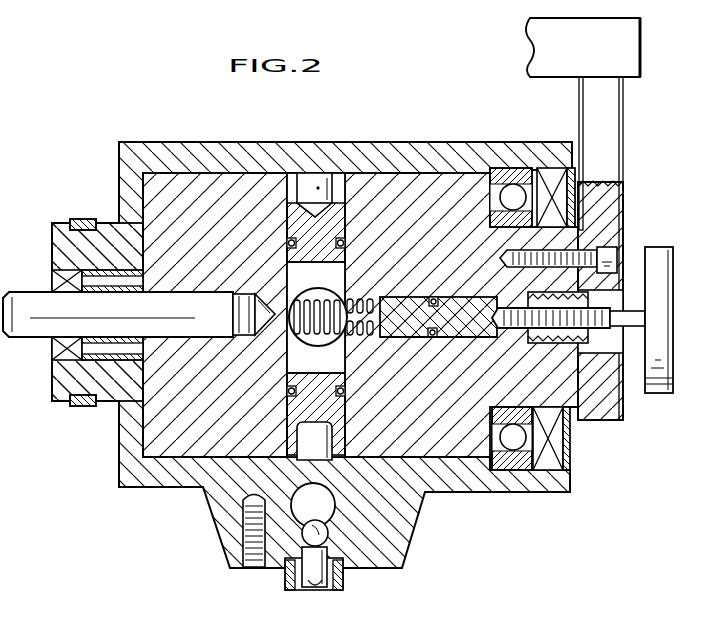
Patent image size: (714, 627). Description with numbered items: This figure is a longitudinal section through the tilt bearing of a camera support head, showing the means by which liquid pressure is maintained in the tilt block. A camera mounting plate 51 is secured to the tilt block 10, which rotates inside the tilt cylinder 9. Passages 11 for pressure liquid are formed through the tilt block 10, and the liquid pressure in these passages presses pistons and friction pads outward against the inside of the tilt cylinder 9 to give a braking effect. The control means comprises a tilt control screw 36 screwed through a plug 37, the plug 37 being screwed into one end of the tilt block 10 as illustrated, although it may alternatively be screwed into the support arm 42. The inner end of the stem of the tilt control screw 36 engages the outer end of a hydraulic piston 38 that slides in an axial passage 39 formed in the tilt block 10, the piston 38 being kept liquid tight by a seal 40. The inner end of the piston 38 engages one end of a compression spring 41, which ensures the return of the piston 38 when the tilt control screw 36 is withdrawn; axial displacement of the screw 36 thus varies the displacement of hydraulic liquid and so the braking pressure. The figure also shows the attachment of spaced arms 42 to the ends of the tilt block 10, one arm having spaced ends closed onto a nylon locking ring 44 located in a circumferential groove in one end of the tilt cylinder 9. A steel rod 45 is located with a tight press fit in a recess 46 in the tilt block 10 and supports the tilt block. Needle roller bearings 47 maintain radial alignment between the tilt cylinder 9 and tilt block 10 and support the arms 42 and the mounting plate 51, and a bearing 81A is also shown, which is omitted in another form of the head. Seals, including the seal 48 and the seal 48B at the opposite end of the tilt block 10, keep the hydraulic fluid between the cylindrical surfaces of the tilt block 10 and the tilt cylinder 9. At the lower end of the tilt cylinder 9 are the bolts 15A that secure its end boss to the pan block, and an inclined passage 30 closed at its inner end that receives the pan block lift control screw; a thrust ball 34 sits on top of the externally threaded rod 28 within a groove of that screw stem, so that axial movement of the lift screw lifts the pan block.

The tilt block 10 is at (210, 190).
The needle roller bearings 47 is at (75, 362).
The nylon locking ring 44 is at (83, 219).
The seal 48 is at (58, 280).
The steel rod 45 is at (129, 314).
The recess 46 is at (242, 300).
The passages 11 is at (320, 292).
The inclined passage 30 is at (313, 497).
The compression spring 41 is at (318, 331).
The hydraulic piston 38 is at (412, 300).
The axial passage 39 is at (410, 338).
The tilt cylinder 9 is at (503, 168).
The bearing 81A is at (513, 190).
The seal 48B is at (572, 176).
The support arm 42 is at (625, 125).
The camera mounting plate 51 is at (523, 37).
The seal 40 is at (436, 299).
The plug 37 is at (590, 301).
The tilt control screw 36 is at (660, 393).
The bolts 15A is at (255, 568).
The thrust ball 34 is at (326, 537).
The rod 28 is at (313, 590).